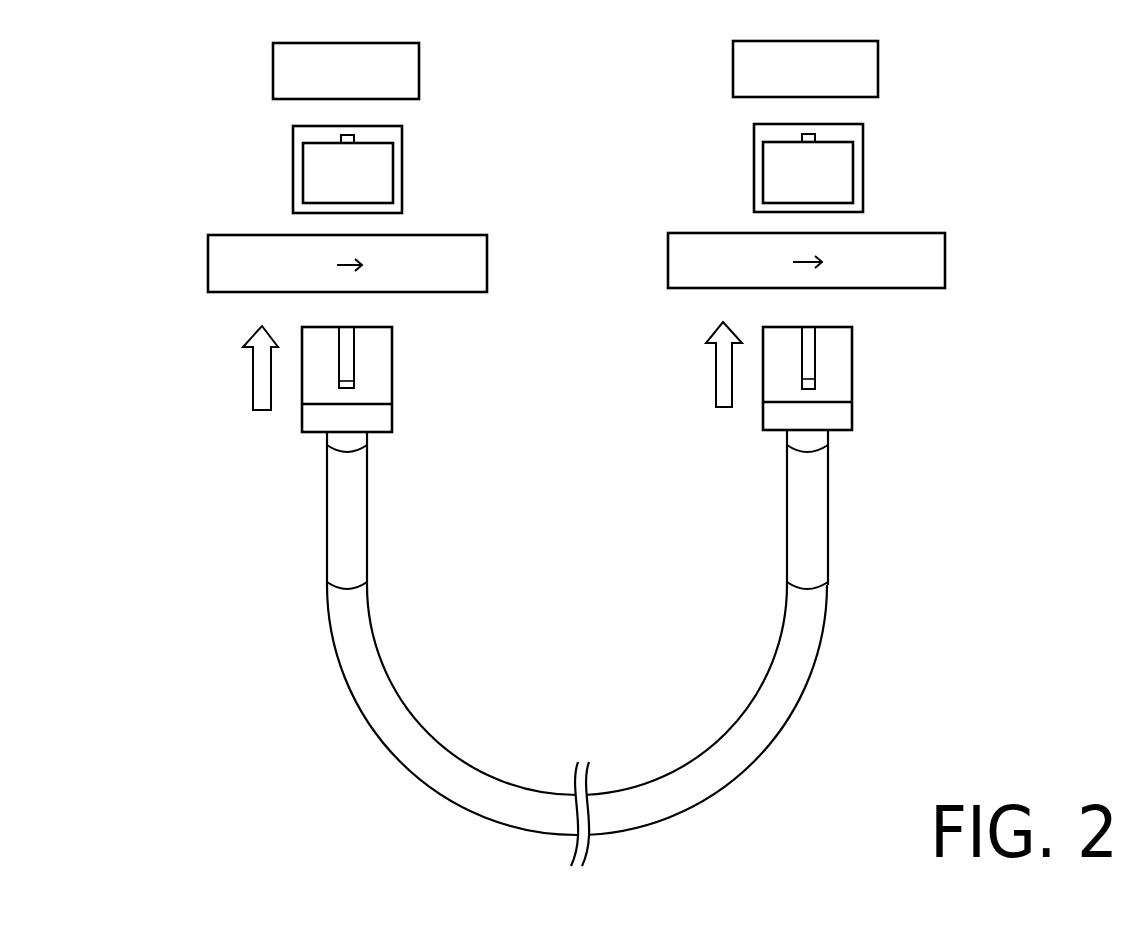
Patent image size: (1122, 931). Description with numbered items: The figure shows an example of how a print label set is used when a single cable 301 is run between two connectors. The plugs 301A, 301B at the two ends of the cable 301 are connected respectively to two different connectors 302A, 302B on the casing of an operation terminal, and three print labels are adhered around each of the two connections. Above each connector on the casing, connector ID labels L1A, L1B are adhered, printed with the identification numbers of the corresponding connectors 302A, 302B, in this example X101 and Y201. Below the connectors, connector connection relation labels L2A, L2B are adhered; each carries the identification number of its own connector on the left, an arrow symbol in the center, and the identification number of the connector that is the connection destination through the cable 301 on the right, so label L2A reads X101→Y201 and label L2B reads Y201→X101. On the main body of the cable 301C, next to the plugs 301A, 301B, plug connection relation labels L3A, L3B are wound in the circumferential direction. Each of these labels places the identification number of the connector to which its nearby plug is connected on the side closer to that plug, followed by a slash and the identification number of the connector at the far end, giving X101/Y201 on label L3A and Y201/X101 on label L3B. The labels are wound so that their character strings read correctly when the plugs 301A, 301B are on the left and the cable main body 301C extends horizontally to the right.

The cable 301 is at (606, 596).
The plug 301A is at (382, 377).
The plug 301B is at (839, 367).
The main body of the cable 301C is at (480, 787).
The connector 302A is at (292, 170).
The connector 302B is at (863, 168).
The connector ID label L1A is at (280, 77).
The connector ID label L1B is at (878, 72).
The connector connection relation label L2A is at (217, 268).
The connector connection relation label L2B is at (945, 263).
The plug connection relation label L3A is at (327, 517).
The plug connection relation label L3B is at (828, 512).